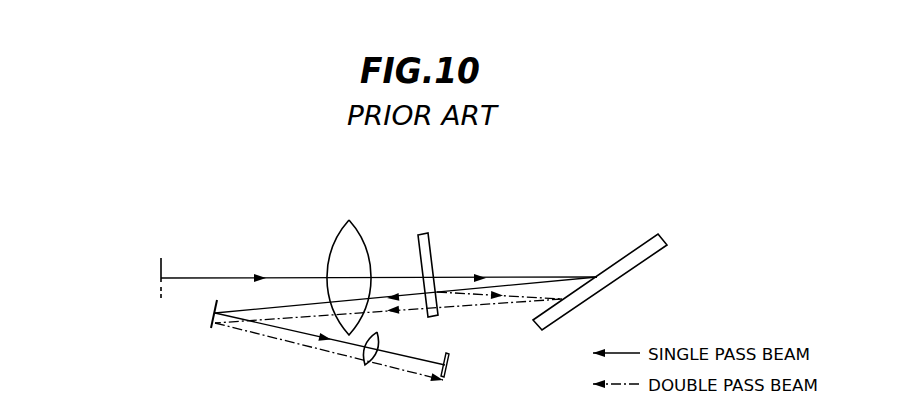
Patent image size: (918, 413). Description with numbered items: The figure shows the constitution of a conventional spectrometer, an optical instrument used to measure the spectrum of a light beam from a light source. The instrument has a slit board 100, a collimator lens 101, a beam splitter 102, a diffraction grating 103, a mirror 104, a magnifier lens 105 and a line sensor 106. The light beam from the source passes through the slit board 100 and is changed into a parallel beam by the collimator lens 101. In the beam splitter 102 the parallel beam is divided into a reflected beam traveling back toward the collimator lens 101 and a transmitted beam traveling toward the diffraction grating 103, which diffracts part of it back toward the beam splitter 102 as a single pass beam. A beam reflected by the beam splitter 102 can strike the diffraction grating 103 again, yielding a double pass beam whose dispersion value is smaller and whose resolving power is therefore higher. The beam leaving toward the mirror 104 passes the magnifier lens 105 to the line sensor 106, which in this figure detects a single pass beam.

The slit board 100 is at (158, 262).
The collimator lens 101 is at (346, 235).
The beam splitter 102 is at (420, 232).
The diffraction grating 103 is at (633, 261).
The mirror 104 is at (211, 307).
The magnifier lens 105 is at (380, 340).
The line sensor 106 is at (452, 363).